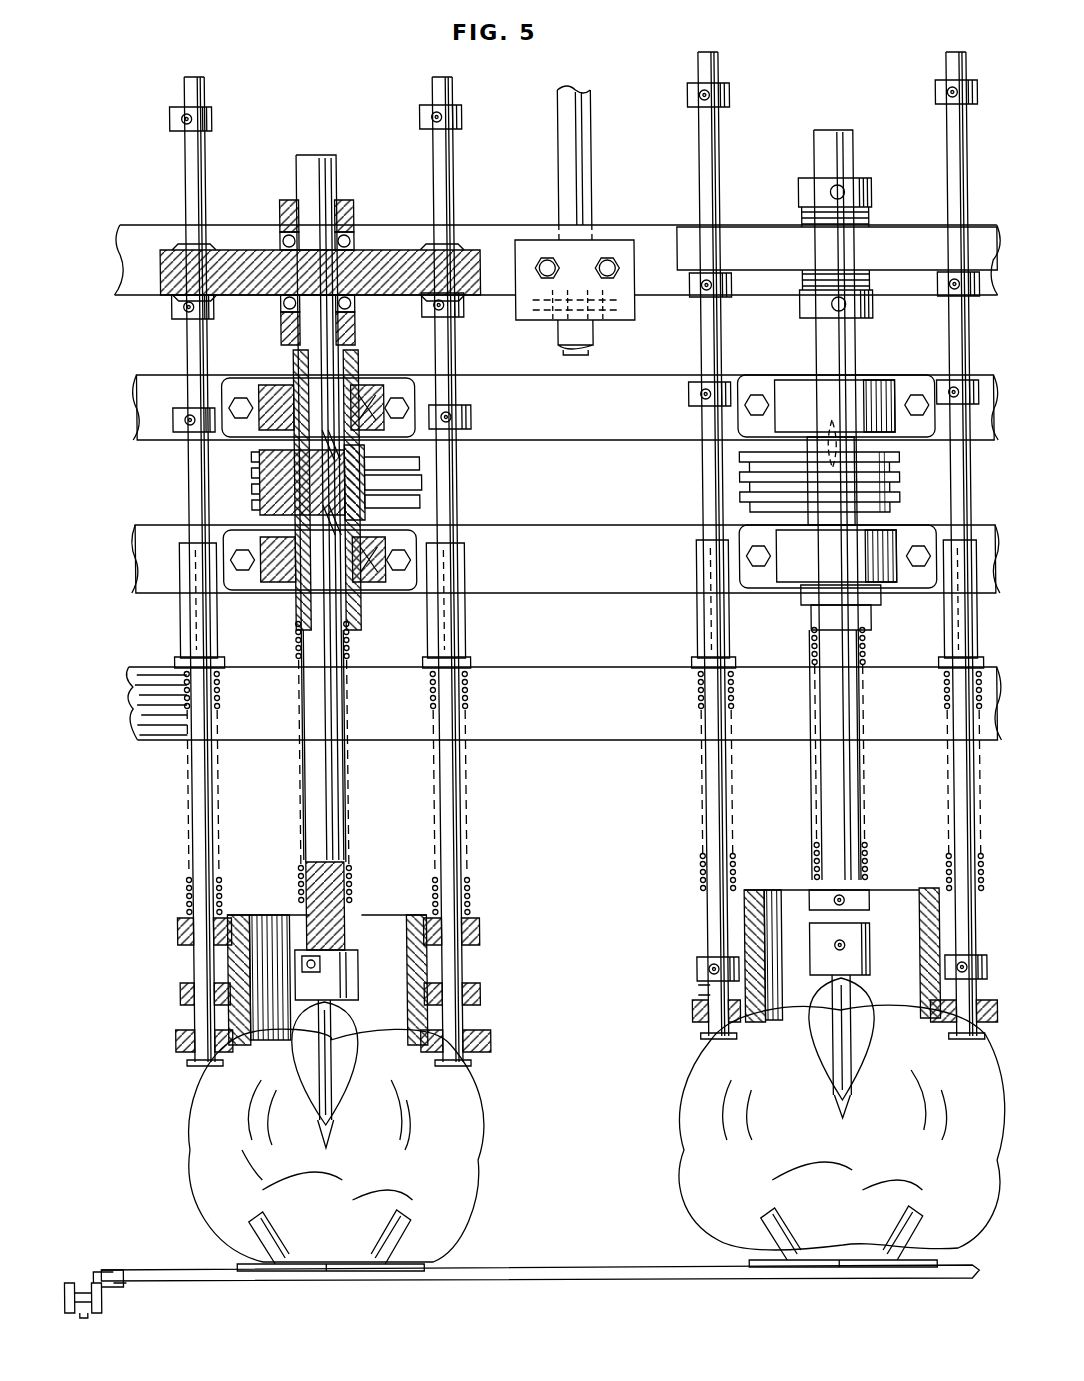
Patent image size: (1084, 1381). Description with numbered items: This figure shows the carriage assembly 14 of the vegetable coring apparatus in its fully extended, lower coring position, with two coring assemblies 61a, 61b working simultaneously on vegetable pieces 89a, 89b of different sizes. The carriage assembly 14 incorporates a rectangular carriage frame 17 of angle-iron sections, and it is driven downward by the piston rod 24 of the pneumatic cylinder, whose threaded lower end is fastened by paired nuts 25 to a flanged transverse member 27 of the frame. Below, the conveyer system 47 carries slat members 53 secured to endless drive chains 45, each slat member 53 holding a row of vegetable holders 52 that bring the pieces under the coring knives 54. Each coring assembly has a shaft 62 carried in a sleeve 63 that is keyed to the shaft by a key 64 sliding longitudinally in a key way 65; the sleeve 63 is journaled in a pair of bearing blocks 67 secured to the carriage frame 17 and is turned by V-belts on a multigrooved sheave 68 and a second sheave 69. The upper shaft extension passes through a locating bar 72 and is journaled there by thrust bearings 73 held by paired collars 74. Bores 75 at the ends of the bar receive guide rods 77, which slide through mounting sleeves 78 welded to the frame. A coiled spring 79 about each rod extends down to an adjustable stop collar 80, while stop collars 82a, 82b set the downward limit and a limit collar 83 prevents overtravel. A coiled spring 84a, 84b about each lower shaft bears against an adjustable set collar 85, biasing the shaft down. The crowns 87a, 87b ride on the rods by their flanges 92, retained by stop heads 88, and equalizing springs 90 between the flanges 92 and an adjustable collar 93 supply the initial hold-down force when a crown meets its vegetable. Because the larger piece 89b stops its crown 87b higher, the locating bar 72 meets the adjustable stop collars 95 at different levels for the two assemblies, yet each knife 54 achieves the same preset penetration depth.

The carriage assembly 14 is at (510, 222).
The carriage frame 17 is at (570, 580).
The piston rod 24 is at (588, 94).
The nuts 25 is at (596, 329).
The transverse member 27 is at (620, 240).
The endless drive chains 45 is at (83, 1286).
The conveyer system 47 is at (140, 1290).
The vegetable holders 52 is at (385, 1240).
The slat member 53 is at (550, 1268).
The coring knives 54 is at (350, 1028).
The coring assembly 61a is at (306, 150).
The coring assembly 61b is at (850, 119).
The shaft 62 is at (308, 773).
The sleeve 63 is at (287, 362).
The key 64 is at (330, 460).
The key way 65 is at (330, 512).
The bearing blocks 67 is at (374, 388).
The multigrooved sheave 68 is at (255, 480).
The pinion gear 69 is at (420, 478).
The locating bar 72 is at (400, 250).
The thrust bearings 73 is at (278, 240).
The collars 74 is at (350, 200).
The bores 75 is at (180, 250).
The guide rods 77 is at (184, 483).
The mounting sleeve 78 is at (174, 620).
The coiled spring 79 is at (462, 683).
The adjustable stop collar 80 is at (168, 936).
The stop collar 82a is at (172, 418).
The stop collar 82b is at (688, 392).
The limit collar 83 is at (169, 110).
The coiled spring 84a is at (340, 880).
The coiled spring 84b is at (866, 628).
The adjustable set collar 85 is at (348, 922).
The crown 87a is at (228, 915).
The crown 87b is at (752, 890).
The stop heads 88 is at (690, 1037).
The vegetable piece 89a is at (466, 1136).
The vegetable piece 89b is at (690, 1138).
The equalizing springs 90 is at (170, 1000).
The flanges 92 is at (480, 1040).
The equalizing spring adjustable collar 93 is at (686, 968).
The adjustable stop collar 95 is at (170, 312).